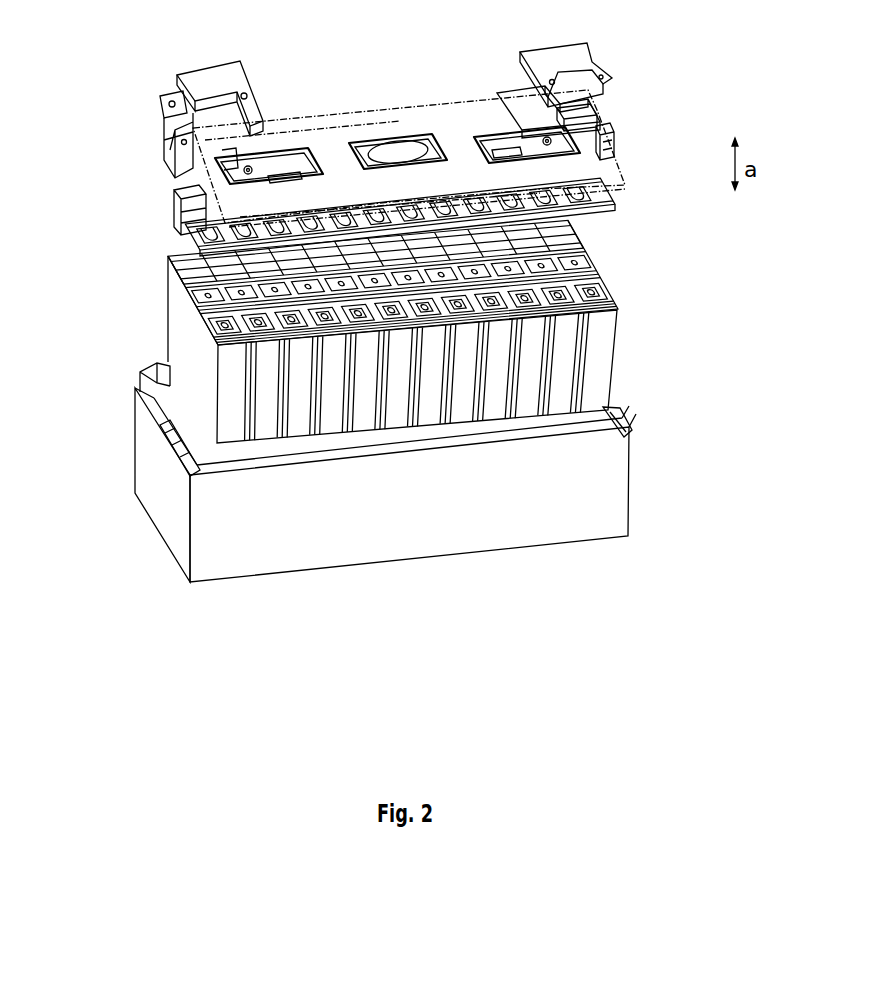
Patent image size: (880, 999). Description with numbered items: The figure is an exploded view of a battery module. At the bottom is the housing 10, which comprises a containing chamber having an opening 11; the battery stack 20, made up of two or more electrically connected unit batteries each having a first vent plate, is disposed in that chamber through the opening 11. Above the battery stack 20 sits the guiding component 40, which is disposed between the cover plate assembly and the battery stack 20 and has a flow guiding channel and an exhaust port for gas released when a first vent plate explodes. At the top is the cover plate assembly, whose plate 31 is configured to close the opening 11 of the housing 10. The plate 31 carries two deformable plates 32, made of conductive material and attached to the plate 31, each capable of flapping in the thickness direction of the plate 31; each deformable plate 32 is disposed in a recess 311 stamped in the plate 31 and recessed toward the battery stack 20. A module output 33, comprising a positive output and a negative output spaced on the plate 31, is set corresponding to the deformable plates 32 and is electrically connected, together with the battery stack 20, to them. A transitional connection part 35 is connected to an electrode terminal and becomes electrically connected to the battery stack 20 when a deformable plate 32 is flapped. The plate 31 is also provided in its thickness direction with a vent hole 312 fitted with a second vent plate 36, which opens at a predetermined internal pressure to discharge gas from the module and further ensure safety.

The housing 10 is at (287, 543).
The opening 11 is at (593, 419).
The battery stack 20 is at (154, 310).
The plate 31 is at (627, 188).
The recess 311 is at (229, 157).
The vent hole 312 is at (377, 143).
The deformable plate 32 is at (296, 165).
The module output 33 is at (217, 68).
The transitional connection part 35 is at (612, 147).
The second vent plate 36 is at (402, 150).
The guiding component 40 is at (164, 191).